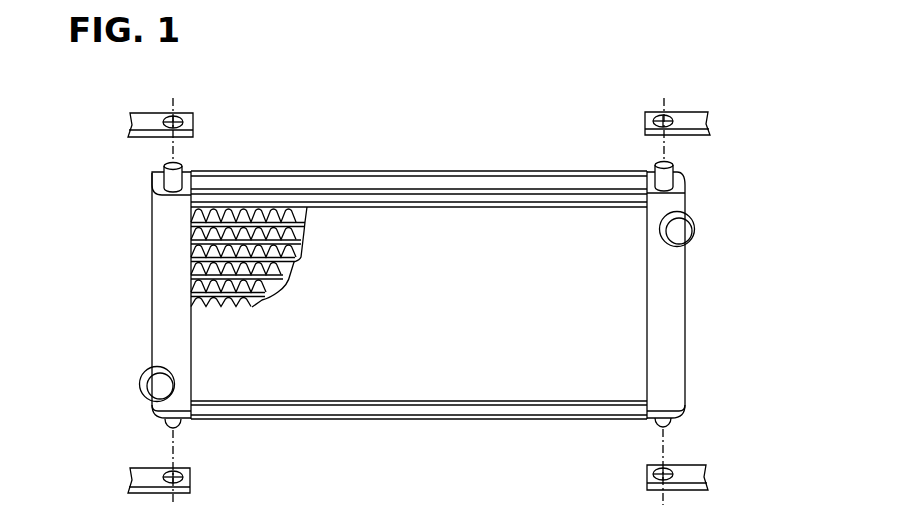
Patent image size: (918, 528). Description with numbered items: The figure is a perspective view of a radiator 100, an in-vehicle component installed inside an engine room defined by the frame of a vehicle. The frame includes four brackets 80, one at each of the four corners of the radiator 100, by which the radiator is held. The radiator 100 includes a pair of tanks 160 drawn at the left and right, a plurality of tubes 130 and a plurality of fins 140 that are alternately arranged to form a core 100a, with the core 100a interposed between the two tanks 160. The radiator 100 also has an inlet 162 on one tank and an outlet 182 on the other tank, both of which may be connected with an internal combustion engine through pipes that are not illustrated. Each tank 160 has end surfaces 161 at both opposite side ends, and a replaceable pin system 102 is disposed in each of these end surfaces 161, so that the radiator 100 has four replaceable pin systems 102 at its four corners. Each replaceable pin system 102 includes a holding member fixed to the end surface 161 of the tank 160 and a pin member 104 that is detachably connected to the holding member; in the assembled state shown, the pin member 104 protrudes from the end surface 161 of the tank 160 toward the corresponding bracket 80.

The bracket 80 is at (130, 117).
The radiator 100 is at (396, 170).
The core 100a is at (270, 212).
The replaceable pin system 102 is at (160, 160).
The pin member 104 is at (163, 168).
The tube 130 is at (190, 241).
The fin 140 is at (190, 209).
The tank 160 is at (152, 338).
The end surface 161 is at (153, 178).
The inlet 162 is at (697, 230).
The outlet 182 is at (143, 388).